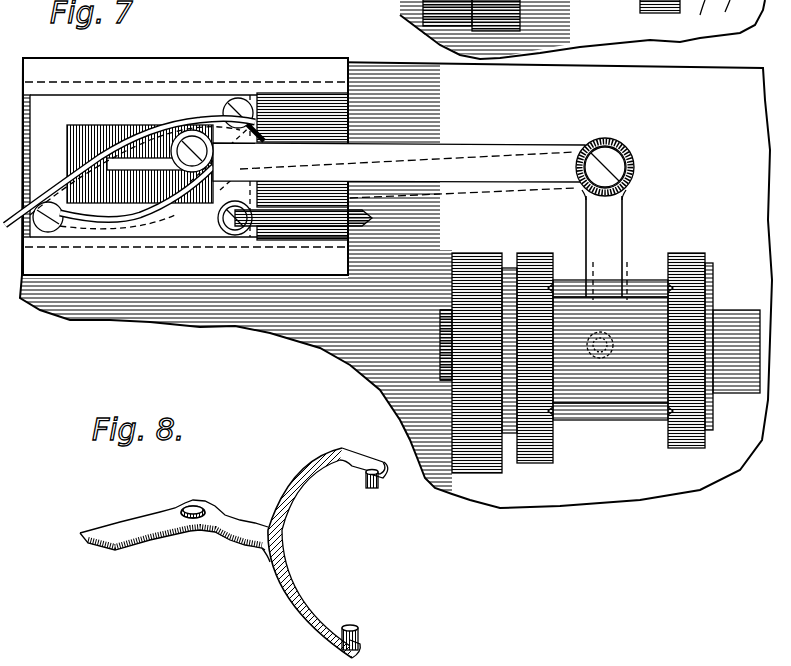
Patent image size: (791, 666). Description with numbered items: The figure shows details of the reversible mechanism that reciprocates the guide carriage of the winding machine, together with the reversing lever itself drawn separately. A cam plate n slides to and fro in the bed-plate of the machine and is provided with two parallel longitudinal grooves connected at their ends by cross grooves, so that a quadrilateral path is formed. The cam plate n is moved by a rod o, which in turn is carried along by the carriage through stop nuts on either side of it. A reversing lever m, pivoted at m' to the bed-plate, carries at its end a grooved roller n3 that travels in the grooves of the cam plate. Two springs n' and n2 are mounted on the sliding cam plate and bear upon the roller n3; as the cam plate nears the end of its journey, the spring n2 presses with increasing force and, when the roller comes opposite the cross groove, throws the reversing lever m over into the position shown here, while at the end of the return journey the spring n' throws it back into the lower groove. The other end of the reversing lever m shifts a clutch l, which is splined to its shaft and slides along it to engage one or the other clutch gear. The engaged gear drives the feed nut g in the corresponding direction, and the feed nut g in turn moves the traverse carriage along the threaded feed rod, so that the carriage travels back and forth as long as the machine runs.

In FIG. 7, the cam plate n is at (185, 166).
In FIG. 7, the spring n' is at (175, 134).
In FIG. 7, the spring n2 is at (148, 200).
In FIG. 7, the grooved roller n3 is at (190, 128).
In FIG. 7, the reversing lever m is at (437, 219).
In FIG. 8, the reversing lever m is at (234, 553).
In FIG. 8, the pivot m' is at (166, 496).
In FIG. 7, the rod o is at (344, 229).
In FIG. 7, the clutch l is at (574, 286).
In FIG. 7, the feed nut g is at (610, 350).